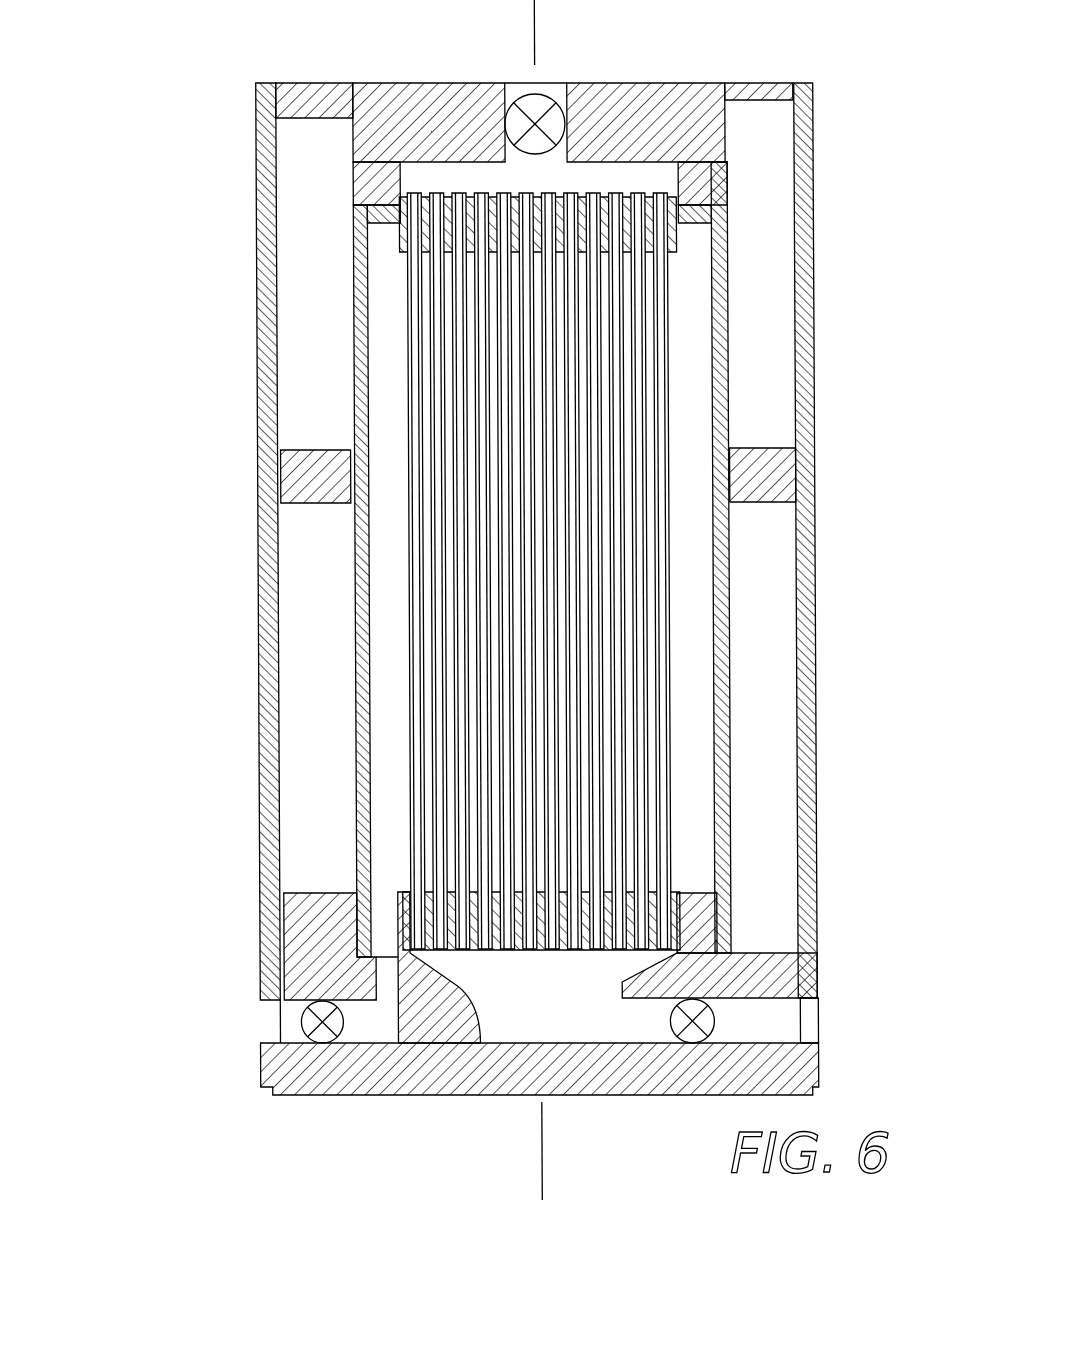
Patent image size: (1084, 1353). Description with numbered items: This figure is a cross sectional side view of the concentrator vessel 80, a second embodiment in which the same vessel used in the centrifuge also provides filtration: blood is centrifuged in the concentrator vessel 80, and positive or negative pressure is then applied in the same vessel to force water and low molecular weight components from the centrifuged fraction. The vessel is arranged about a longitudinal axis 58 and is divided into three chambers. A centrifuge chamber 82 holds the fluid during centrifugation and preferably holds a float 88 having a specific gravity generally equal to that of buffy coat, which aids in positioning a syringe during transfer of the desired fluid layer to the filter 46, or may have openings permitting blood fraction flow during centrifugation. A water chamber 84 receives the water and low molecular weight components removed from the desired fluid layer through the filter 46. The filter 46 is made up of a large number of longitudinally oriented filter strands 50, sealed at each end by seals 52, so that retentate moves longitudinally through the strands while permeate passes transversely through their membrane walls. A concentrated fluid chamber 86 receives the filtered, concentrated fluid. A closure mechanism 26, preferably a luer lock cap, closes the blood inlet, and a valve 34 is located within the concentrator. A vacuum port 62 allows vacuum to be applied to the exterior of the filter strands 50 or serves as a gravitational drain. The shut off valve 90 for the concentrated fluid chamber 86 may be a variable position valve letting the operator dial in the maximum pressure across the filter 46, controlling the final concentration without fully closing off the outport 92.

The concentrator vessel 80 is at (218, 112).
The closure mechanism 26 is at (313, 83).
The valve 34 is at (555, 90).
The longitudinal axis 58 is at (552, 0).
The centrifuge chamber 82 is at (324, 261).
The water chamber 84 is at (403, 406).
The float 88 is at (297, 480).
The seals 52 is at (650, 250).
The filter 46 is at (645, 571).
The filter strands 50 is at (618, 748).
The concentrated fluid chamber 86 is at (556, 1004).
The vacuum port 62 is at (258, 1025).
The shut off valve 90 is at (692, 1035).
The outport 92 is at (817, 1020).